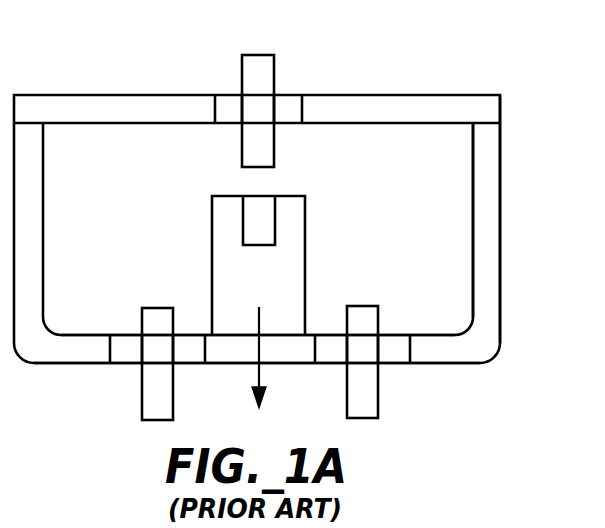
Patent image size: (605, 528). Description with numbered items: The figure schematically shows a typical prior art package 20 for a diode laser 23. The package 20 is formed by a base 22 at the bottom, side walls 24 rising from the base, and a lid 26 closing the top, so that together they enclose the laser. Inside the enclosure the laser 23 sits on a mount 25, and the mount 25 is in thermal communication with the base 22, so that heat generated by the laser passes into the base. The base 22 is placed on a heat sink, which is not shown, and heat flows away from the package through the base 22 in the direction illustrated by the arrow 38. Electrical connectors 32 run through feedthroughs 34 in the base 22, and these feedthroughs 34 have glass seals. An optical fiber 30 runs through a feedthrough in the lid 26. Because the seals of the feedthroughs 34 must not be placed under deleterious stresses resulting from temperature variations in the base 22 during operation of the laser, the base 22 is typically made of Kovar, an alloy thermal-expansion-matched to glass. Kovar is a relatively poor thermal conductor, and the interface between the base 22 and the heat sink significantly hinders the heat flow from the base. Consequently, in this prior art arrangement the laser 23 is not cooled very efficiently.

The package 20 is at (488, 62).
The base 22 is at (455, 363).
The diode laser 23 is at (260, 202).
The side walls 24 is at (502, 173).
The mount 25 is at (305, 242).
The lid 26 is at (368, 92).
The optical fiber 30 is at (257, 53).
The electrical connectors 32 is at (175, 375).
The feedthroughs 34 is at (125, 367).
The arrow 38 is at (263, 372).